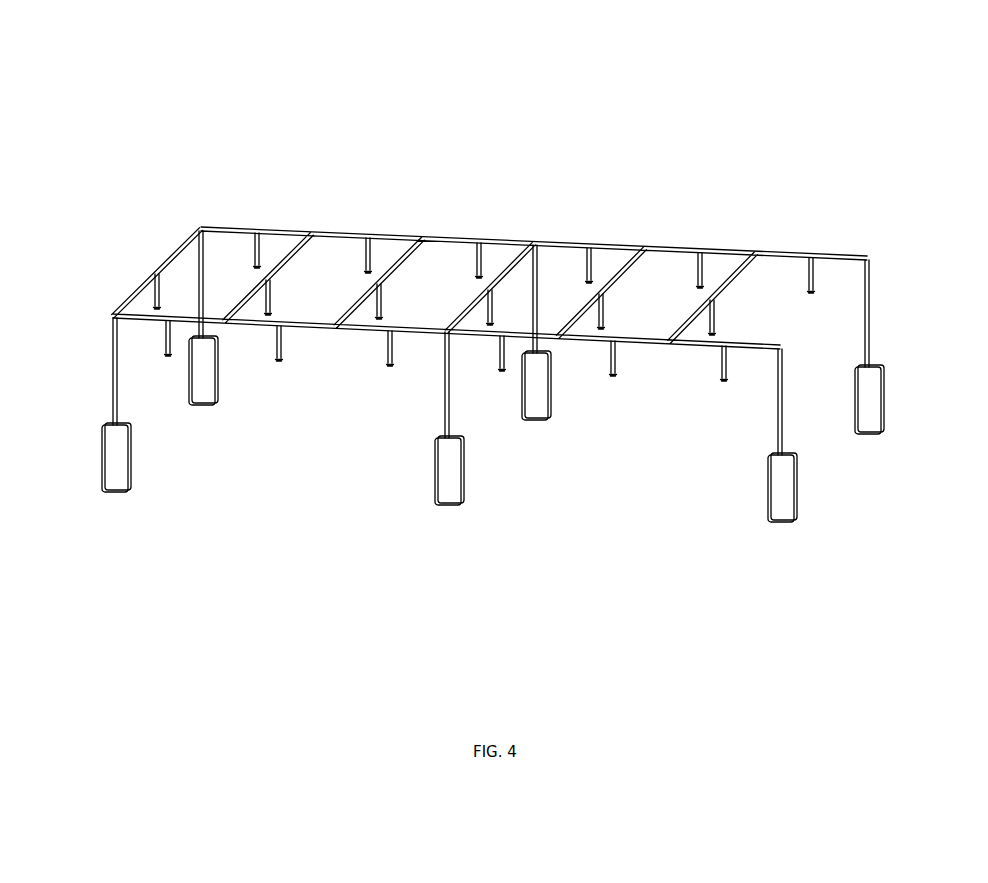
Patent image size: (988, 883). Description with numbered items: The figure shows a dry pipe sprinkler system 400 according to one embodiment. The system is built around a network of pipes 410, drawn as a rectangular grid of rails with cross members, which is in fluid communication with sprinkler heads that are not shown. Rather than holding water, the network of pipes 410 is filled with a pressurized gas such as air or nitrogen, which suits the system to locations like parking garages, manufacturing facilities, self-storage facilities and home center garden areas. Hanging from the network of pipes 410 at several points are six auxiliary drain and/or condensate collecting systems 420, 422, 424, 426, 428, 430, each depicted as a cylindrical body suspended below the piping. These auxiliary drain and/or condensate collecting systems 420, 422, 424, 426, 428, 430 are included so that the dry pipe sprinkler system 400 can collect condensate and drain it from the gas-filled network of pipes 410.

The dry pipe sprinkler system 400 is at (767, 90).
The network of pipes 410 is at (155, 260).
The auxiliary drain and/or condensate collecting system 420 is at (202, 388).
The auxiliary drain and/or condensate collecting system 422 is at (528, 370).
The auxiliary drain and/or condensate collecting system 424 is at (865, 380).
The auxiliary drain and/or condensate collecting system 426 is at (112, 477).
The auxiliary drain and/or condensate collecting system 428 is at (447, 465).
The auxiliary drain and/or condensate collecting system 430 is at (779, 470).